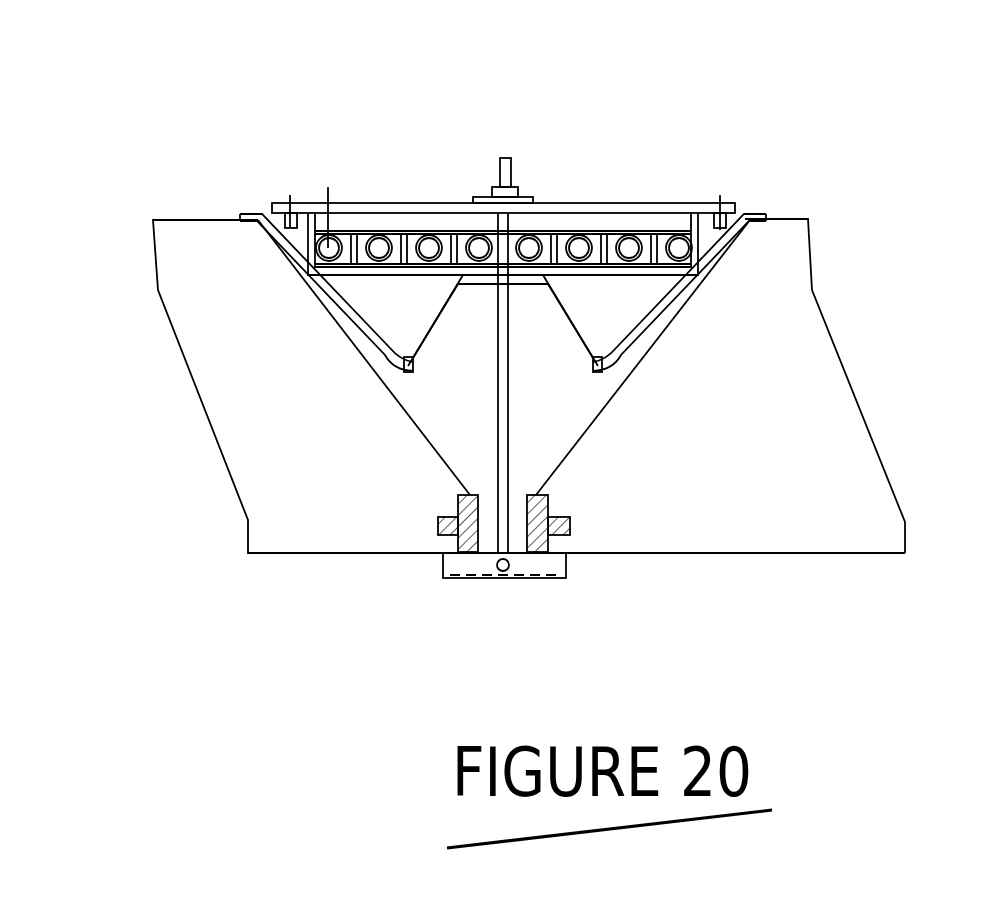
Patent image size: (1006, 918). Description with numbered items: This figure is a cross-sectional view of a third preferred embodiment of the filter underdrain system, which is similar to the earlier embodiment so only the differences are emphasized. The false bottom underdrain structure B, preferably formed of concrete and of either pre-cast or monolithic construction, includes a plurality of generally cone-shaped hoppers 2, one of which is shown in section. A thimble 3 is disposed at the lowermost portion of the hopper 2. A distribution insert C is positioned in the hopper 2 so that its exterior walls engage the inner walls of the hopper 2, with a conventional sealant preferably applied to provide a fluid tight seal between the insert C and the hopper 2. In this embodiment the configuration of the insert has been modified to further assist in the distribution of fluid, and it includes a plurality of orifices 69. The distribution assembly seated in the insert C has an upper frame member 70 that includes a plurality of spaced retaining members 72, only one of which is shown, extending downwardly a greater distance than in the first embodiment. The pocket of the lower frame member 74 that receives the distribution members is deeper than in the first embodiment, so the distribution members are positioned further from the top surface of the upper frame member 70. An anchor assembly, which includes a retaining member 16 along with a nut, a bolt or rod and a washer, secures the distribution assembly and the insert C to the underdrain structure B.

The hopper 2 is at (420, 425).
The false bottom underdrain structure B is at (860, 455).
The thimble 3 is at (456, 533).
The retaining member 16 is at (545, 580).
The upper frame member 70 is at (630, 202).
The retaining member 72 is at (545, 222).
The lower frame member 74 is at (705, 227).
The distribution insert C is at (445, 297).
The orifice 69 is at (410, 362).